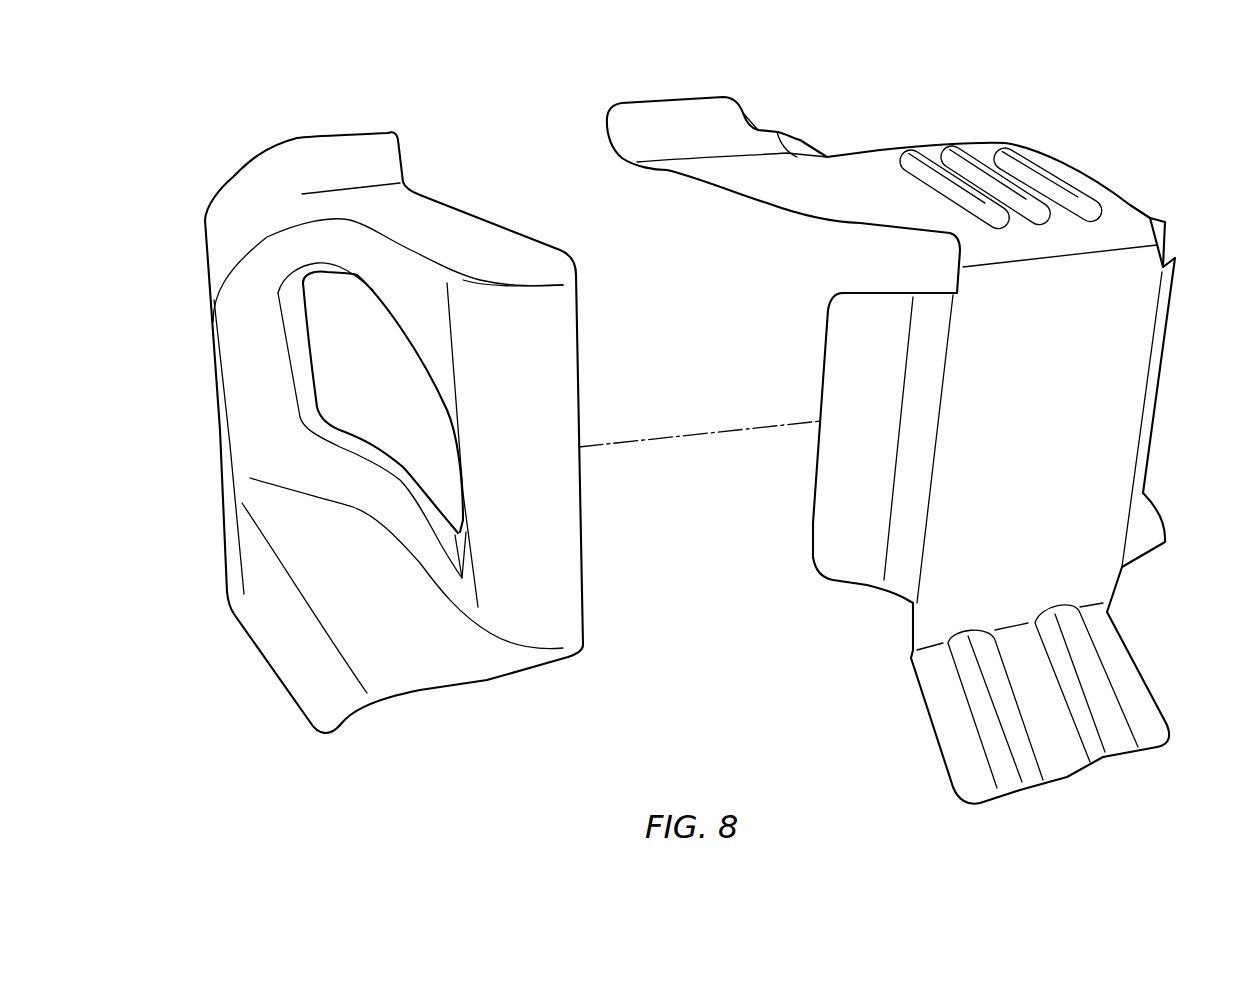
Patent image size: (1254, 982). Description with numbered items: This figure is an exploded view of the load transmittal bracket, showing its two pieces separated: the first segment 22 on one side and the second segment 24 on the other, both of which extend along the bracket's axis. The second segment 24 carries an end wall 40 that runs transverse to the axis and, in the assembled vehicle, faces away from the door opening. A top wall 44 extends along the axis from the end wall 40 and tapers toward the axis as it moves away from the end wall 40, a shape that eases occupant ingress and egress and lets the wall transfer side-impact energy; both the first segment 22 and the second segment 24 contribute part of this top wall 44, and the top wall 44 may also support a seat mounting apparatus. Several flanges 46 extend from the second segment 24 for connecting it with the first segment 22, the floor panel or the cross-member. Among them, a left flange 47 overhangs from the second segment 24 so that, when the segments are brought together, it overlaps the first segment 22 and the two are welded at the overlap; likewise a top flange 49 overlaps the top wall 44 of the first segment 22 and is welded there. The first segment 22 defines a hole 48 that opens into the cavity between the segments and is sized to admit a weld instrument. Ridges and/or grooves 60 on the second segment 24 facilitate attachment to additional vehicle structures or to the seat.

The first segment 22 is at (215, 145).
The second segment 24 is at (633, 87).
The end wall 40 is at (891, 425).
The top wall 44 is at (450, 228).
The flanges 46 is at (735, 112).
The left flange 47 is at (852, 493).
The hole 48 is at (313, 407).
The top flange 49 is at (683, 128).
The ridges and/or grooves 60 is at (1037, 170).